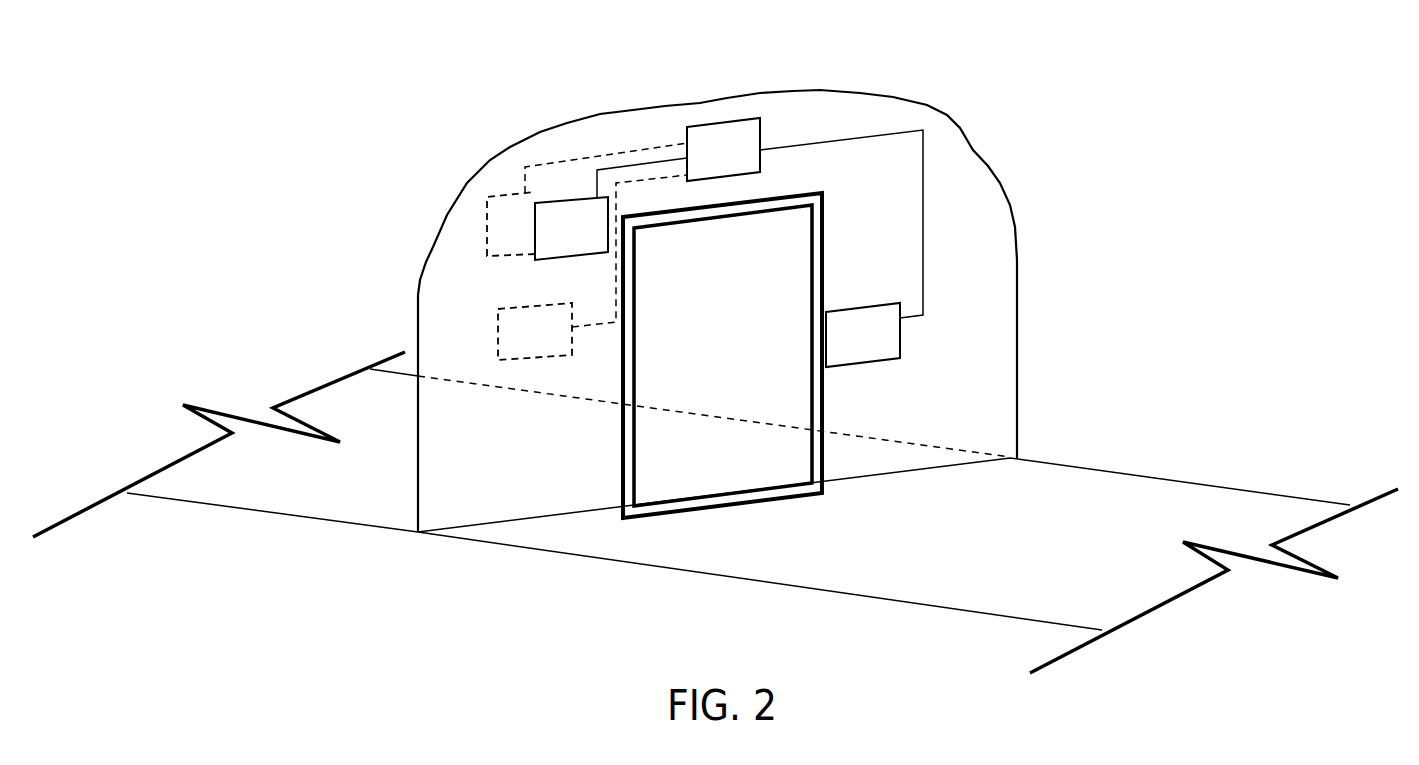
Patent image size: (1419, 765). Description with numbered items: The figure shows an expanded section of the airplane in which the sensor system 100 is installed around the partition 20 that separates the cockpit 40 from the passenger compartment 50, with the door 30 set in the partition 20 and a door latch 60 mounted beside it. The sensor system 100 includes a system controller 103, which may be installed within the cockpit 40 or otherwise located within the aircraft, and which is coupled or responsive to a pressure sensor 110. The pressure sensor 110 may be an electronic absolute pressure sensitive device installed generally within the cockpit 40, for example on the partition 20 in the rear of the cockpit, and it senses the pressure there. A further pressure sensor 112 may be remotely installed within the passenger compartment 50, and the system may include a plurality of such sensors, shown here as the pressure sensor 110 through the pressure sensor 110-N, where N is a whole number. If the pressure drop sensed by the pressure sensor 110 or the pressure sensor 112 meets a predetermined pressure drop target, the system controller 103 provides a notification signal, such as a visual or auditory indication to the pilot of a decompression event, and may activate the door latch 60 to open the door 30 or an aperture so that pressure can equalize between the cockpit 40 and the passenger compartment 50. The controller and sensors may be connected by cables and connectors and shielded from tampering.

The sensor system 100 is at (717, 278).
The partition 20 is at (977, 232).
The door 30 is at (702, 372).
The cockpit 40 is at (1011, 546).
The passenger compartment 50 is at (316, 474).
The door latch 60 is at (855, 345).
The system controller 103 is at (740, 161).
The pressure sensor 110 is at (590, 240).
The pressure sensor 112 is at (528, 235).
The pressure sensor 110-N is at (510, 343).